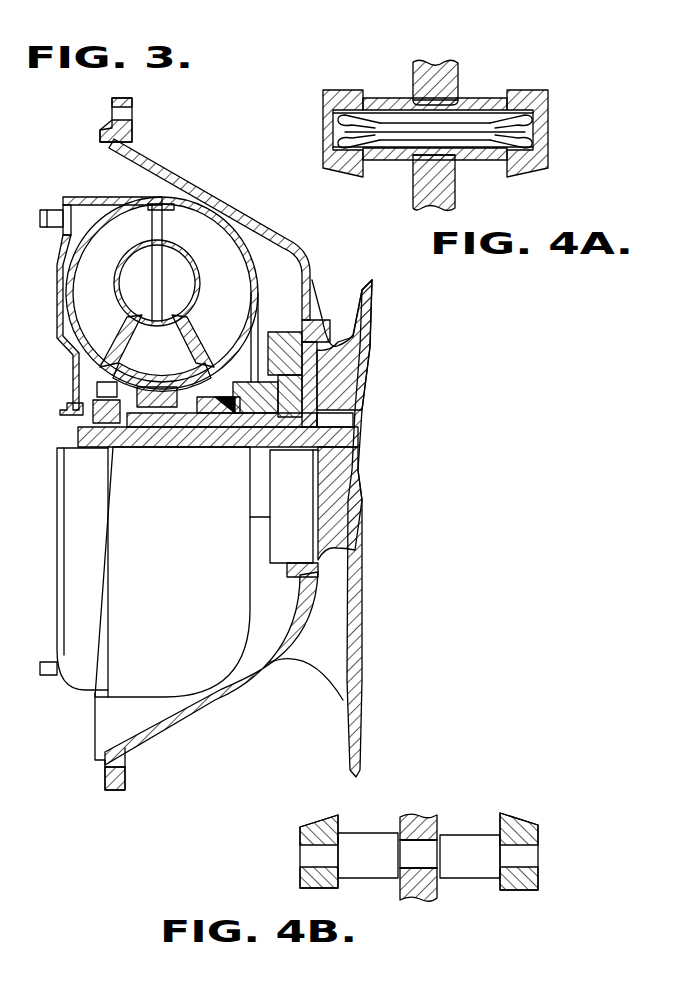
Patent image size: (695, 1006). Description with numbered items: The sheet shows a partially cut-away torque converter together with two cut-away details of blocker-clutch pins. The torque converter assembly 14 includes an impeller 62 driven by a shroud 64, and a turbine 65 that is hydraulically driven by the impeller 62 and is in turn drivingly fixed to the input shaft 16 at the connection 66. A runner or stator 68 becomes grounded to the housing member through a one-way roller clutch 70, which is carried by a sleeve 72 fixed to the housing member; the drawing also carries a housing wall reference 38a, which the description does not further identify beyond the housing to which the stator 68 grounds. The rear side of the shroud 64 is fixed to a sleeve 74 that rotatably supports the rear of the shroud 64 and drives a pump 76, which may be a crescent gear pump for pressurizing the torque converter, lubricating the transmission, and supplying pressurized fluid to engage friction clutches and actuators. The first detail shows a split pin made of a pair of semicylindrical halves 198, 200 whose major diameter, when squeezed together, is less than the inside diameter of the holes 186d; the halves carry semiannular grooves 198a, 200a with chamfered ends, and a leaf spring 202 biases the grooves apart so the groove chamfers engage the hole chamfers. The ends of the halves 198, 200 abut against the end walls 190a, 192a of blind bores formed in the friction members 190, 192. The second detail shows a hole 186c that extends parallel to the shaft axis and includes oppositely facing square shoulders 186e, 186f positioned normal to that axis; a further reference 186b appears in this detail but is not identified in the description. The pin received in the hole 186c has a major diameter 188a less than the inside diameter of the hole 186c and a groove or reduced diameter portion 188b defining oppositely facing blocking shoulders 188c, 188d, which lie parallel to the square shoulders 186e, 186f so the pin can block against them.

In FIG. 3, the torque converter assembly 14 is at (183, 554).
In FIG. 3, the input shaft 16 is at (80, 433).
In FIG. 3, the housing wall 38a is at (203, 187).
In FIG. 3, the impeller 62 is at (228, 312).
In FIG. 3, the shroud 64 is at (96, 200).
In FIG. 3, the turbine 65 is at (105, 306).
In FIG. 3, the fixing point of turbine to input shaft 66 is at (97, 390).
In FIG. 3, the runner or stator 68 is at (172, 358).
In FIG. 3, the one-way roller clutch 70 is at (152, 420).
In FIG. 3, the sleeve 72 is at (217, 420).
In FIG. 3, the sleeve 74 is at (237, 420).
In FIG. 3, the pump 76 is at (273, 328).
In FIG. 4A, the pin 186b is at (405, 65).
In FIG. 4B, the pin 186b is at (428, 900).
In FIG. 4B, the hole 186c is at (418, 815).
In FIG. 4A, the holes 186d is at (455, 160).
In FIG. 4B, the square shoulder 186e is at (400, 880).
In FIG. 4B, the square shoulder 186f is at (437, 882).
In FIG. 4B, the major diameter 188a is at (352, 833).
In FIG. 4B, the groove or reduced diameter portion 188b is at (435, 830).
In FIG. 4B, the blocking shoulder 188c is at (400, 850).
In FIG. 4B, the blocking shoulder 188d is at (437, 851).
In FIG. 4A, the friction member 190 is at (340, 176).
In FIG. 4A, the end wall 190a is at (333, 125).
In FIG. 4A, the friction member 192 is at (535, 176).
In FIG. 4A, the end wall 192a is at (530, 120).
In FIG. 4A, the semicylindrical half 198 is at (392, 98).
In FIG. 4A, the semiannular groove 198a is at (452, 70).
In FIG. 4A, the semicylindrical half 200 is at (390, 160).
In FIG. 4A, the semiannular groove 200a is at (405, 160).
In FIG. 4A, the leaf spring 202 is at (340, 118).